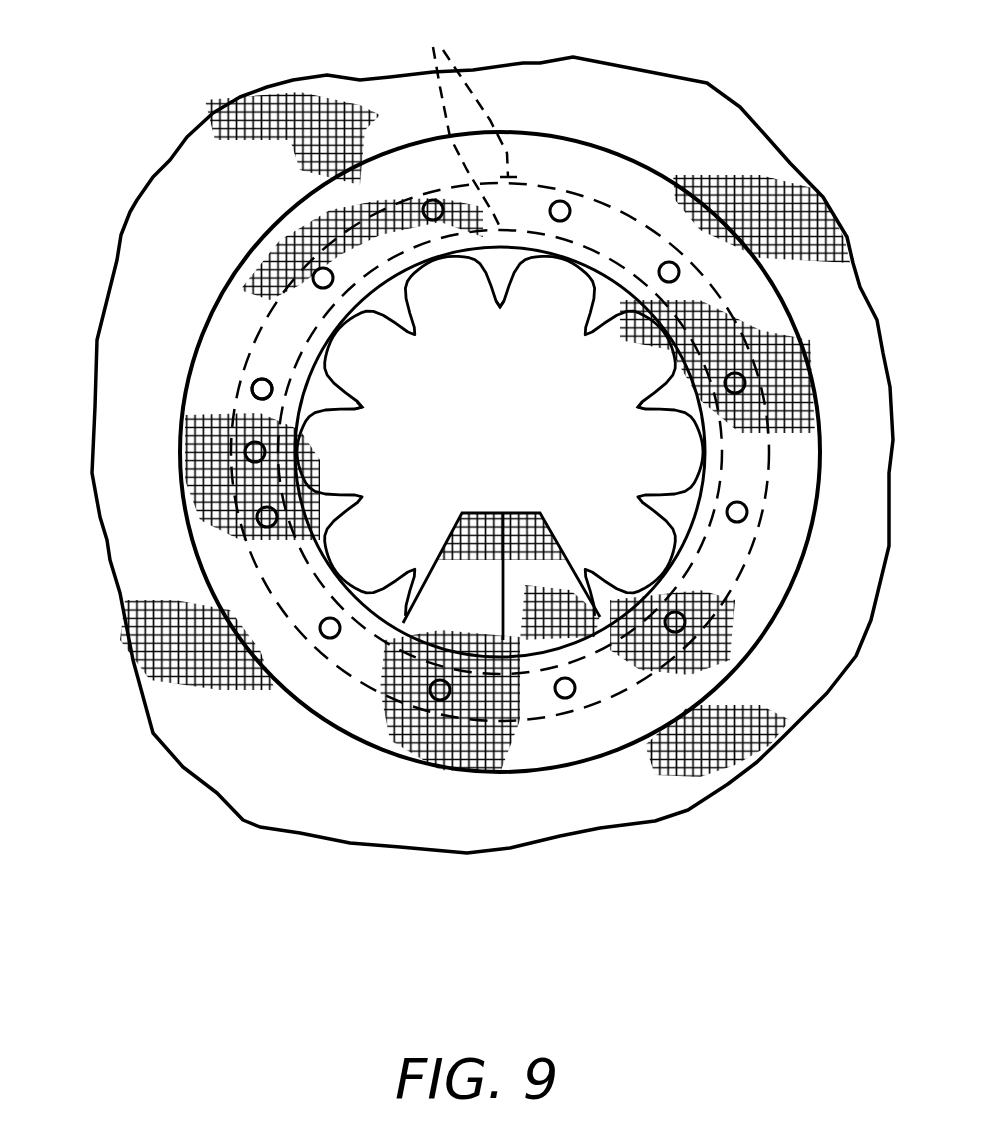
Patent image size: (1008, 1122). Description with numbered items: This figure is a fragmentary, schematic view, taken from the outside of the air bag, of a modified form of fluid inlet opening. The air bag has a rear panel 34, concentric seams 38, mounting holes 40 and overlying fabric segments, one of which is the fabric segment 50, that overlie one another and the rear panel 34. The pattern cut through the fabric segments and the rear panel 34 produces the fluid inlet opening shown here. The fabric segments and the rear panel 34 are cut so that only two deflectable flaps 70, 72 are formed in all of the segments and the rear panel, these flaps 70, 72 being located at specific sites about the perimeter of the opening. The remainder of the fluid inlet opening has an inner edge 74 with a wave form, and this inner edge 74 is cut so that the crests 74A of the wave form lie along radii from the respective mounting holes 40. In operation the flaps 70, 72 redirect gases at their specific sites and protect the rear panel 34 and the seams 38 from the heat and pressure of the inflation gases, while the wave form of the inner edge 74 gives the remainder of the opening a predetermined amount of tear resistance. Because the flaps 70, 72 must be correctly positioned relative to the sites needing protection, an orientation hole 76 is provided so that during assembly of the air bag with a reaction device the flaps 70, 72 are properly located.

The rear panel 34 is at (629, 785).
The concentric seams 38 is at (433, 47).
The mounting holes 40 is at (247, 445).
The fabric segment 50 is at (782, 480).
The deflectable flap 70 is at (437, 553).
The deflectable flap 72 is at (565, 553).
The inner edge 74 is at (390, 305).
The crests 74A is at (500, 307).
The orientation hole 76 is at (253, 382).